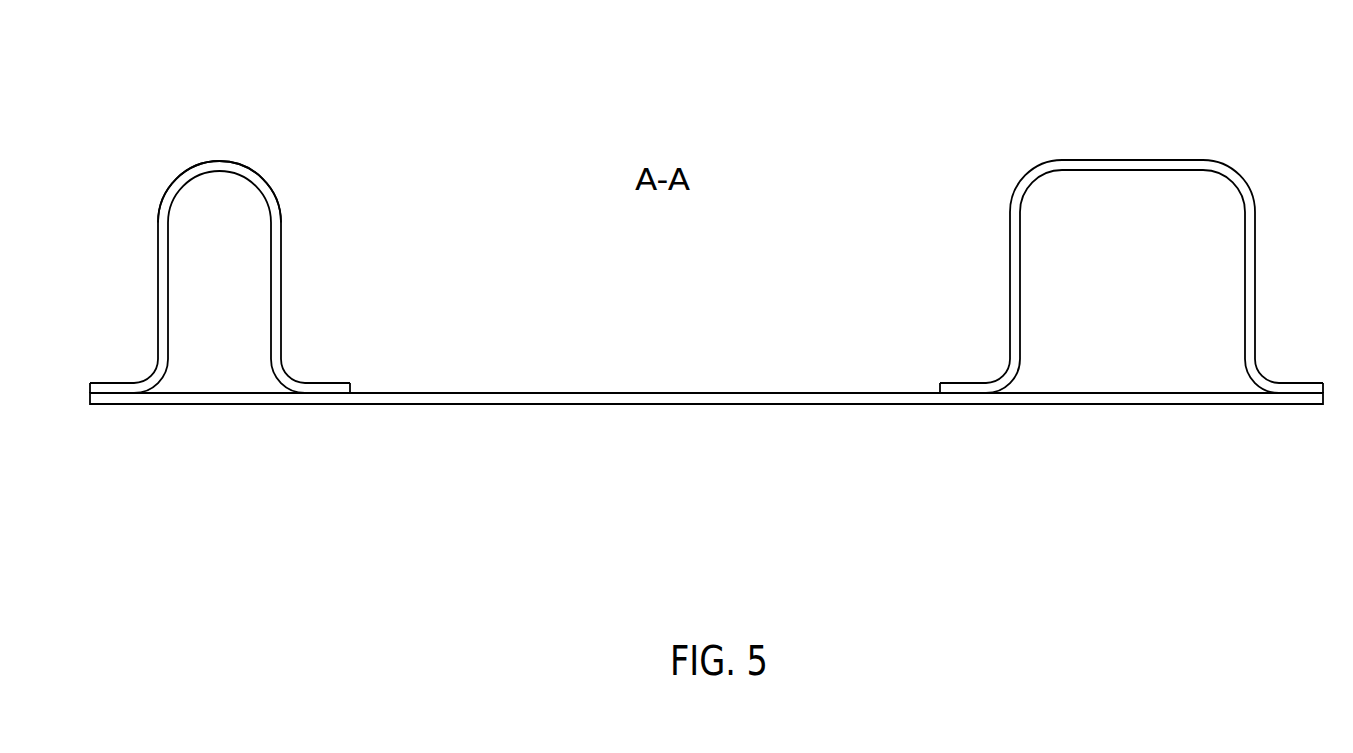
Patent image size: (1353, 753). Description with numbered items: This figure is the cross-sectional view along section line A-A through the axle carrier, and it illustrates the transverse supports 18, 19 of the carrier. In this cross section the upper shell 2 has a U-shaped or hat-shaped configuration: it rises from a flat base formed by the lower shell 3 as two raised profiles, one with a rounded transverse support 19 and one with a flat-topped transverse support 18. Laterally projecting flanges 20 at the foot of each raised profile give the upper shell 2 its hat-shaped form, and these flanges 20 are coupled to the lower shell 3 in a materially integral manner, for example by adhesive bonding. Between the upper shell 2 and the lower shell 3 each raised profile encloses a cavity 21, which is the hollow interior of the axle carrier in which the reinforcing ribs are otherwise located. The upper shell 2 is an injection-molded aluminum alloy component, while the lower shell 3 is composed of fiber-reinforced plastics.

The upper shell 2 is at (265, 173).
The lower shell 3 is at (653, 407).
The transverse support 18 is at (1147, 162).
The transverse support 19 is at (193, 177).
The laterally projecting flanges 20 is at (111, 387).
The cavity 21 is at (233, 310).